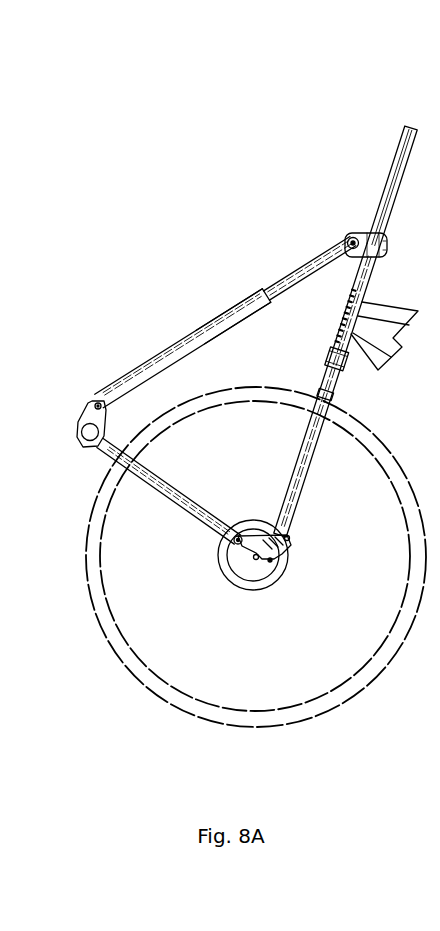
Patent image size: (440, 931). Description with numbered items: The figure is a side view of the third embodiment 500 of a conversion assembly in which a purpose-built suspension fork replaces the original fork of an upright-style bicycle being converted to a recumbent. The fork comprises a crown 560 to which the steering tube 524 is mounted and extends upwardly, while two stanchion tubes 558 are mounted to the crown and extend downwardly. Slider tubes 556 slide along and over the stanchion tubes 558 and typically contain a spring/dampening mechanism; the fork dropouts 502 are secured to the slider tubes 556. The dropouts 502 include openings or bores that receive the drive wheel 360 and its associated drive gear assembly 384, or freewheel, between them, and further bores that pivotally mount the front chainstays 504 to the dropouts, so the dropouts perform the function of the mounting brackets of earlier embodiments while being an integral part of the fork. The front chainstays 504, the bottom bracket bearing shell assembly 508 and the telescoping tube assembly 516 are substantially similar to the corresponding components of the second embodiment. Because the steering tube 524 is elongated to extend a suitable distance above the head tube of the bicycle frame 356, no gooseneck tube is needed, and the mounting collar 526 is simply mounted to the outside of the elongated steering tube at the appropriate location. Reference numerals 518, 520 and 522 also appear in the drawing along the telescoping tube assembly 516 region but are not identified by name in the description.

The third embodiment conversion assembly 500 is at (212, 96).
The fork dropouts 502 is at (255, 562).
The front chainstays 504 is at (166, 497).
The bottom bracket bearing shell assembly 508 is at (78, 437).
The telescoping tube assembly 516 is at (251, 328).
The upper arm 518 is at (164, 357).
The inner telescoping tube 520 is at (297, 275).
The pivot joint 522 is at (347, 240).
The steering tube 524 is at (401, 177).
The mounting collar 526 is at (366, 231).
The slider tubes 556 is at (325, 440).
The stanchion tubes 558 is at (332, 396).
The crown 560 is at (328, 352).
The bicycle frame 356 is at (405, 304).
The drive gear assembly 384 is at (291, 566).
The drive wheel 360 is at (362, 677).